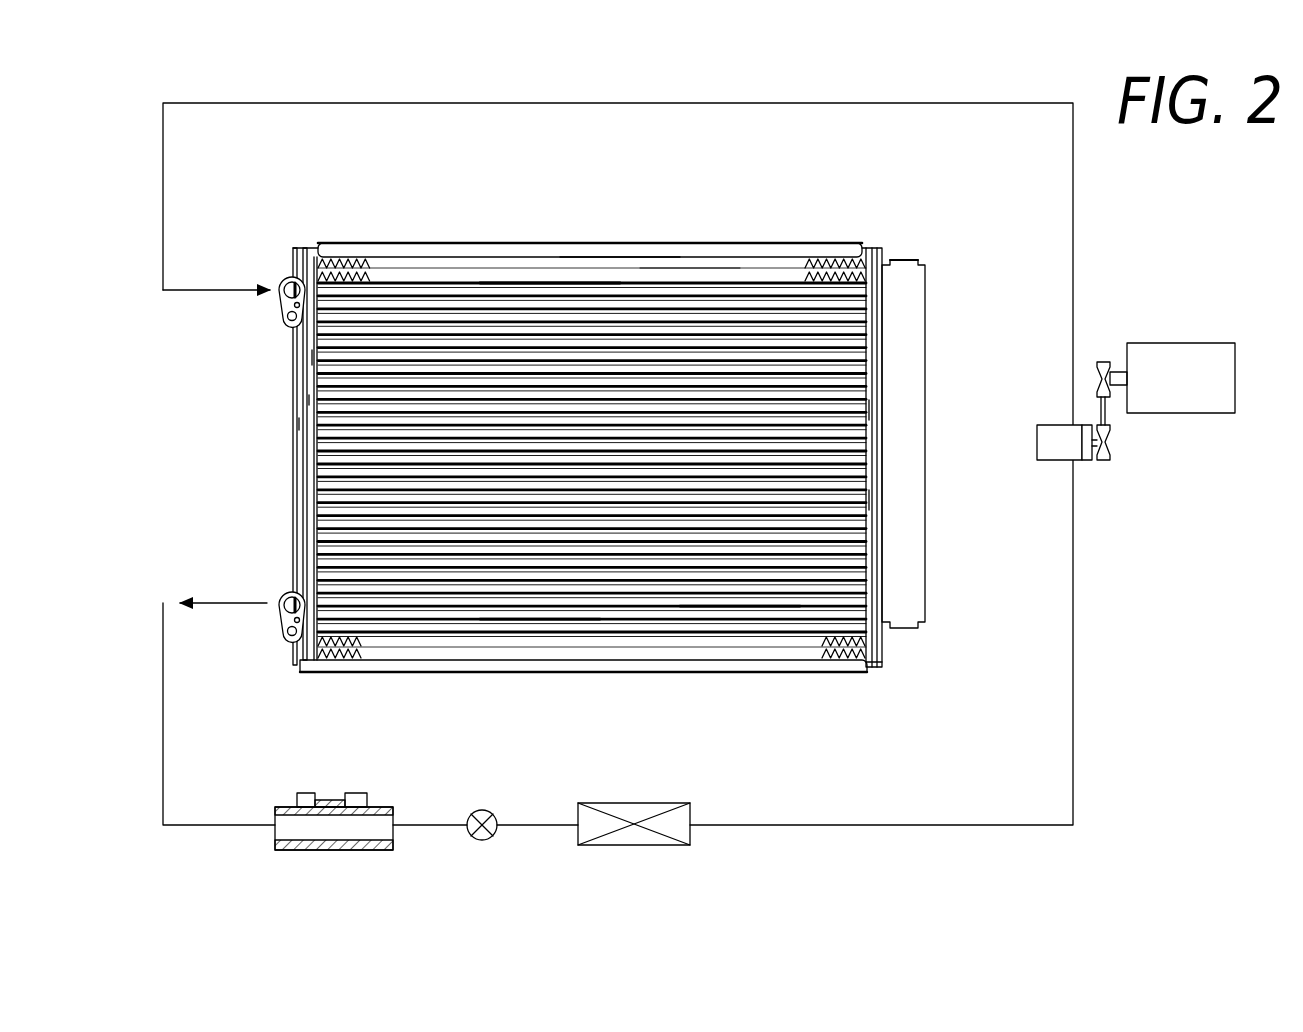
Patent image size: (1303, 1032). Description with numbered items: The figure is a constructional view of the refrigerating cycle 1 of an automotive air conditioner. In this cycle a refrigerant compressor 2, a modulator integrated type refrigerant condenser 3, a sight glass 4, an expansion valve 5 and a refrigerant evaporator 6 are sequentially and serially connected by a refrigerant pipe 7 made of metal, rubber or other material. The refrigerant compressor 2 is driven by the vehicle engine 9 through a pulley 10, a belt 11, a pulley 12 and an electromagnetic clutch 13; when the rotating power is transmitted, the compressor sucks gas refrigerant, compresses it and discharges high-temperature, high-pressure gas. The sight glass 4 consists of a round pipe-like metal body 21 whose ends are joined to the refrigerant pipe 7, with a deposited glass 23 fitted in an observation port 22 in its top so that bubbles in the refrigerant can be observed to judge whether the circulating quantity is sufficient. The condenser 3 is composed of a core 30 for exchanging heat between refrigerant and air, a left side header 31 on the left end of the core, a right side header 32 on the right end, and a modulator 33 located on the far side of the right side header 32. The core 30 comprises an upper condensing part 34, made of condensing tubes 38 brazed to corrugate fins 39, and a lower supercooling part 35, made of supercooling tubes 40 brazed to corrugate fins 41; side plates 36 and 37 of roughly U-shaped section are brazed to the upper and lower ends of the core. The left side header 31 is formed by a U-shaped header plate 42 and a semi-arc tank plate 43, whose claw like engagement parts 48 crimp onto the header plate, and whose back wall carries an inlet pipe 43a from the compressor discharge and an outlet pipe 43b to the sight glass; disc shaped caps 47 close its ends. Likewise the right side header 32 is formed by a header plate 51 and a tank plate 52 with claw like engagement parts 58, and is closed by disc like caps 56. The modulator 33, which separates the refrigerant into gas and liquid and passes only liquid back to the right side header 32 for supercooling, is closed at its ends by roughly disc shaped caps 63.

The refrigerating cycle 1 is at (182, 99).
The refrigerant compressor 2 is at (1057, 452).
The modulator integrated type refrigerant condenser 3 is at (385, 240).
The sight glass 4 is at (285, 796).
The expansion valve 5 is at (478, 810).
The refrigerant evaporator 6 is at (605, 803).
The refrigerant pipe 7 is at (1076, 648).
The engine 9 is at (1183, 358).
The pulley 10 is at (1100, 362).
The belt 11 is at (1104, 412).
The pulley 12 is at (1110, 450).
The electromagnetic clutch 13 is at (1095, 448).
The metal body 21 is at (305, 845).
The observation port 22 is at (340, 800).
The deposited glass 23 is at (350, 845).
The core 30 is at (741, 240).
The left side header 31 is at (290, 464).
The right side header 32 is at (900, 648).
The modulator 33 is at (929, 321).
The condensing part 34 is at (548, 290).
The supercooling part 35 is at (720, 622).
The side plate 36 is at (620, 250).
The side plate 37 is at (640, 668).
The condensing tubes 38 is at (682, 280).
The corrugate fins 39 is at (793, 275).
The supercooling tubes 40 is at (532, 622).
The corrugate fins 41 is at (360, 640).
The header plate 42 is at (312, 400).
The tank plate 43 is at (300, 424).
The inlet pipe 43a is at (284, 282).
The outlet pipe 43b is at (284, 594).
The caps 47 is at (300, 247).
The claw like engagement parts 48 is at (310, 358).
The header plate 51 is at (878, 410).
The tank plate 52 is at (882, 248).
The caps 56 is at (878, 668).
The claw like engagement parts 58 is at (875, 500).
The caps 63 is at (900, 262).